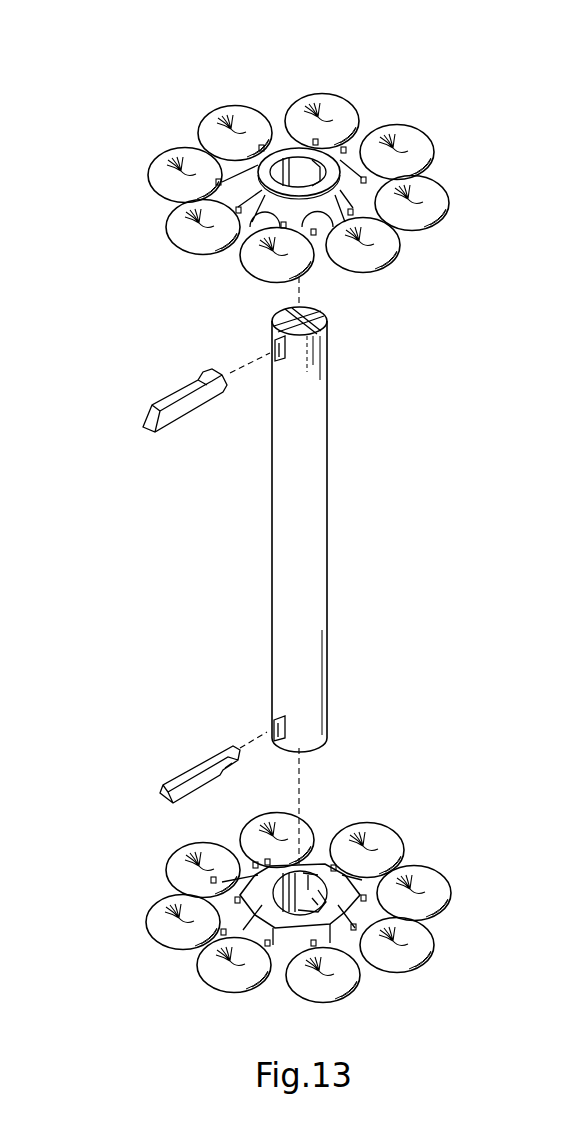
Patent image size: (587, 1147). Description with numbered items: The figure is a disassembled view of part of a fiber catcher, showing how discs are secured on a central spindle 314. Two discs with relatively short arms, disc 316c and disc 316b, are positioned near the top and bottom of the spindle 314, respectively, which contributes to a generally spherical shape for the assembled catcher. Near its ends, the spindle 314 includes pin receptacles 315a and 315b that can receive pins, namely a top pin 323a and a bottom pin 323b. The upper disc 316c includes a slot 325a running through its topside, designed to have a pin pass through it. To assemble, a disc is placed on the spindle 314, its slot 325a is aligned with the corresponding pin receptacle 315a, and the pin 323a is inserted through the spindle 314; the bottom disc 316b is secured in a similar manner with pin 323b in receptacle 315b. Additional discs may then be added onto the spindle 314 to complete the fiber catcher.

The spindle 314 is at (272, 562).
The pin receptacle 315a is at (272, 343).
The pin receptacle 315b is at (273, 718).
The top pin 323a is at (157, 400).
The bottom pin 323b is at (192, 770).
The slot 325a is at (250, 172).
The disc 316b is at (192, 1005).
The disc 316c is at (255, 148).